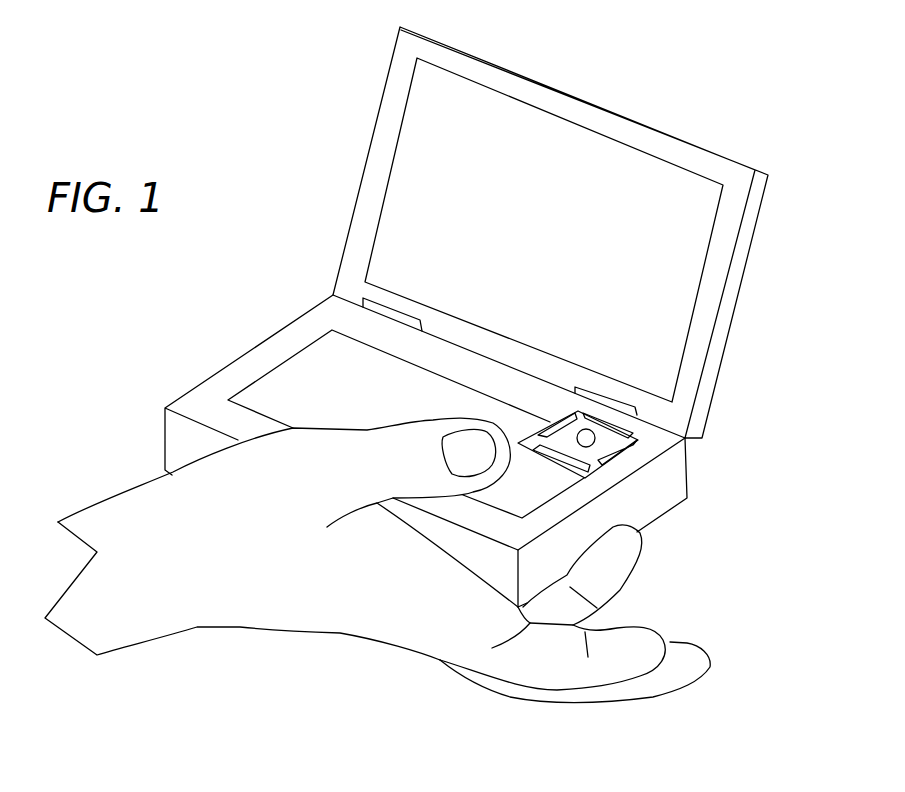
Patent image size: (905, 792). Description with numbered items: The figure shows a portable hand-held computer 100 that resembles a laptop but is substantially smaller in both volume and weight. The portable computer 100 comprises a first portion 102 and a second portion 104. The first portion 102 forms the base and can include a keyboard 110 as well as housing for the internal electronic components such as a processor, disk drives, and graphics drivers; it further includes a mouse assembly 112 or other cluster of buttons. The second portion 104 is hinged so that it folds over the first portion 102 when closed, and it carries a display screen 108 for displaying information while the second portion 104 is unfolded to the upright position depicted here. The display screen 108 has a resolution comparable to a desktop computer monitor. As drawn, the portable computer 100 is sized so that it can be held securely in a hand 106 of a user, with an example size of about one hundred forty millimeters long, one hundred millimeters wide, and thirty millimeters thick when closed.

The portable computer 100 is at (178, 443).
The first portion 102 is at (666, 506).
The second portion 104 is at (505, 207).
The hand 106 is at (303, 595).
The display screen 108 is at (665, 200).
The keyboard 110 is at (290, 387).
The mouse assembly 112 is at (638, 449).